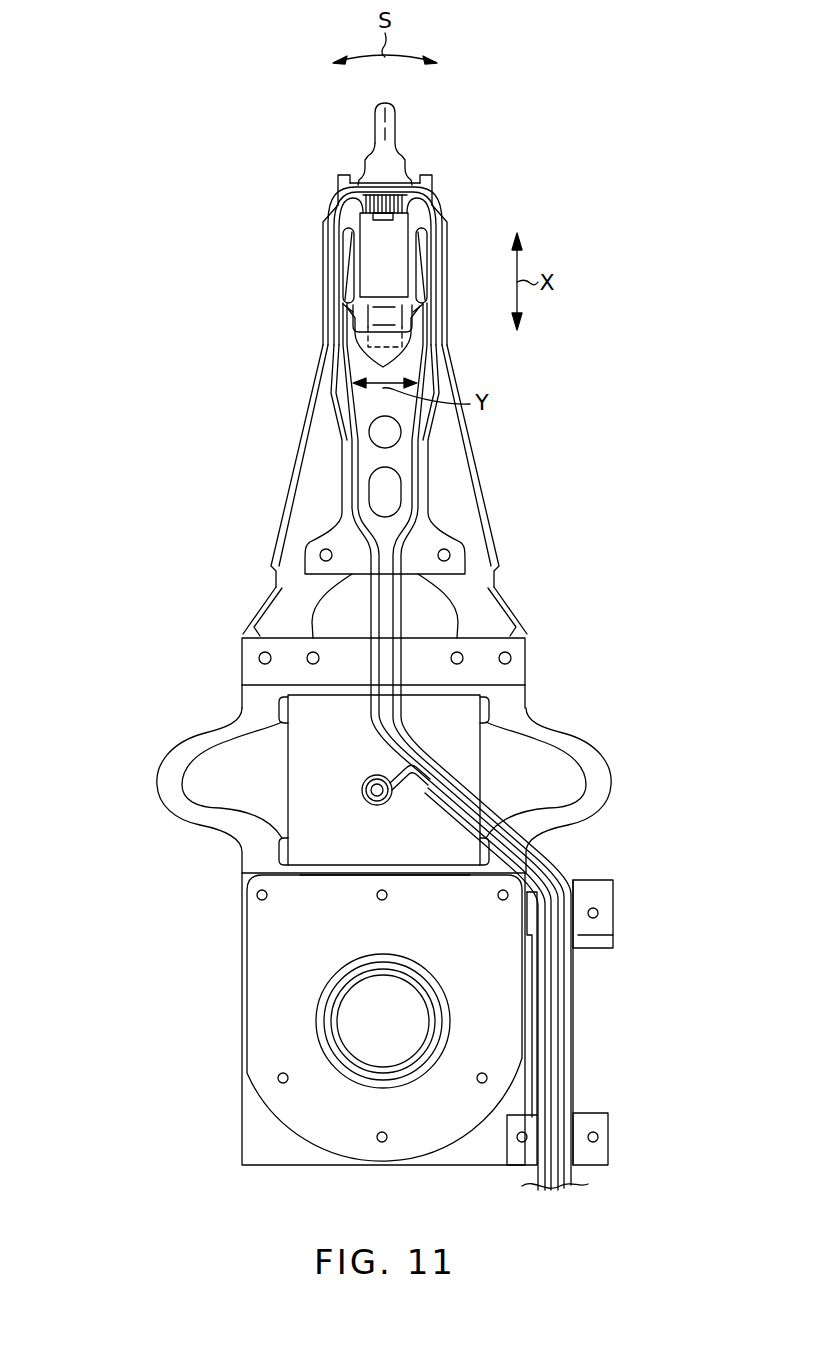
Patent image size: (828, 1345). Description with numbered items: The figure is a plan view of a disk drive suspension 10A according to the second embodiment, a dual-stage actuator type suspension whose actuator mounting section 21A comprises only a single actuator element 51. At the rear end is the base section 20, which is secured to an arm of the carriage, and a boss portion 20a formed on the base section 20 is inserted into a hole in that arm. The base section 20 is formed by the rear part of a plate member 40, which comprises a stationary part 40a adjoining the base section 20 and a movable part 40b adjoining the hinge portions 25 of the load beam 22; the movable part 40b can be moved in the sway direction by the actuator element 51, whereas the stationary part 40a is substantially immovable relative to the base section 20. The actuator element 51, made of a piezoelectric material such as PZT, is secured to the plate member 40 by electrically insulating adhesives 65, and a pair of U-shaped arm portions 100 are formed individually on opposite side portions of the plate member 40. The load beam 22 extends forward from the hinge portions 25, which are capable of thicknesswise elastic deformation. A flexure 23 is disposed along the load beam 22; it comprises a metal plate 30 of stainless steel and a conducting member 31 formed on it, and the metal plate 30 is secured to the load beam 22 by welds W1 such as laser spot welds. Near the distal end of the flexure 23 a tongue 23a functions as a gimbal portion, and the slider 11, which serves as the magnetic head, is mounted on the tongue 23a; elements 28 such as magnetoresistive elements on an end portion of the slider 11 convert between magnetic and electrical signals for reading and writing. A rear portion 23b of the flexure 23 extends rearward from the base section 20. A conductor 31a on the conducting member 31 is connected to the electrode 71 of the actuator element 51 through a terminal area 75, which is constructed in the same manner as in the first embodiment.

The suspension 10A is at (222, 389).
The slider 11 is at (375, 268).
The base section 20 is at (258, 968).
The boss portion 20a is at (318, 1037).
The actuator mounting section 21A is at (160, 716).
The load beam 22 is at (312, 475).
The flexure 23 is at (338, 420).
The tongue 23a is at (349, 280).
The rear portion of the flexure 23b is at (573, 1047).
The hinge portions 25 is at (270, 605).
The elements 28 is at (393, 218).
The metal plate 30 is at (425, 532).
The conducting member 31 is at (422, 472).
The conductor 31a is at (443, 793).
The plate member 40 is at (240, 938).
The stationary part 40a is at (335, 870).
The movable part 40b is at (320, 690).
The actuator element 51 is at (288, 778).
The electrically insulating adhesives 65 is at (280, 708).
The first electrode 71 is at (462, 753).
The terminal area 75 is at (350, 795).
The U-shaped arm portions 100 is at (157, 778).
The welds W1 is at (444, 549).